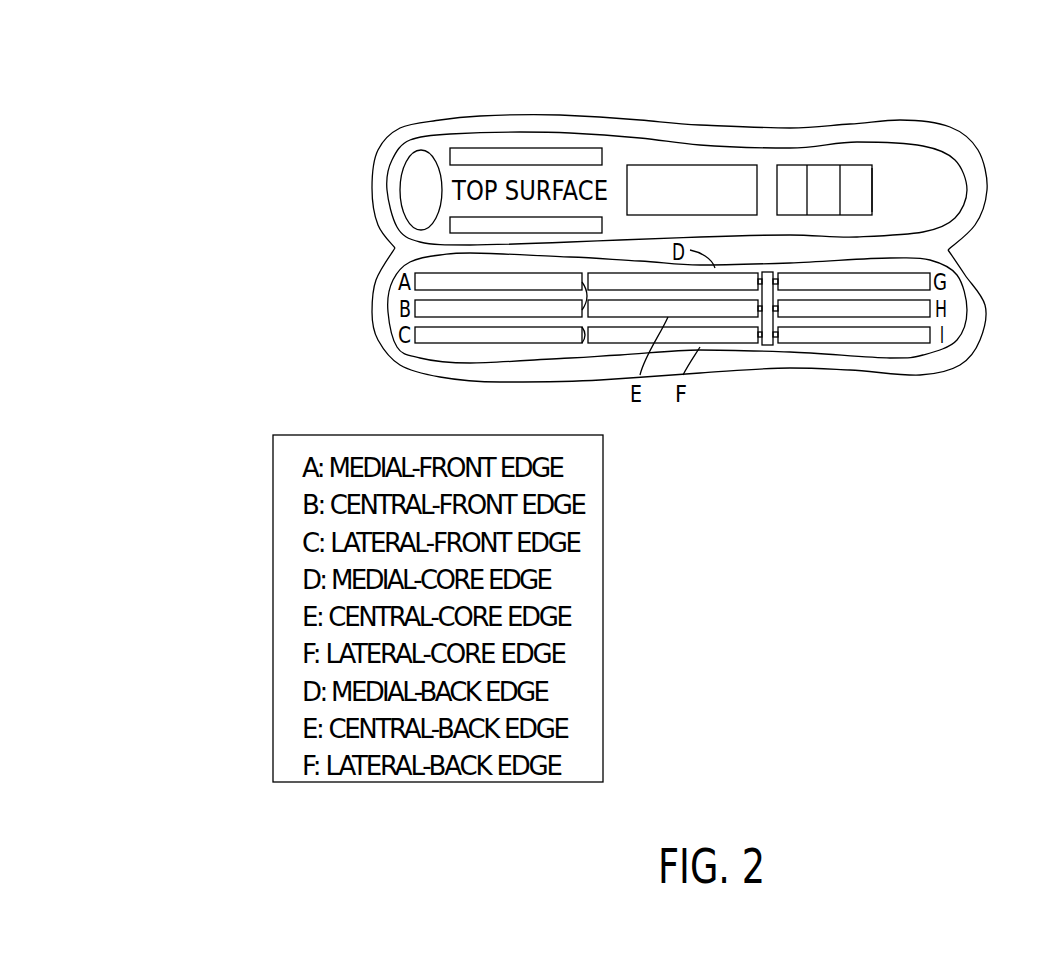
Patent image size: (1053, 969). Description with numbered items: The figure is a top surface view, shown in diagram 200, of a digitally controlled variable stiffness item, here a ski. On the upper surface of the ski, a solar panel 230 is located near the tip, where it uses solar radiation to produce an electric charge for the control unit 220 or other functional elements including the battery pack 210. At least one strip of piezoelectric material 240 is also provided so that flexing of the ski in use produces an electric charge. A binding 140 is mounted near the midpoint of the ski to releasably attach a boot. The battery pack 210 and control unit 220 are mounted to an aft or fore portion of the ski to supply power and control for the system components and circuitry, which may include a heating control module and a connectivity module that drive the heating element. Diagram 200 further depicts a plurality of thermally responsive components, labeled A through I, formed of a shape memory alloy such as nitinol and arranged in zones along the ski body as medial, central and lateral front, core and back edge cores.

The diagram 200 is at (186, 113).
The solar panel 230 is at (423, 150).
The strip of piezoelectric material 240 is at (567, 148).
The binding 140 is at (650, 165).
The battery pack 210 is at (832, 165).
The control unit 220 is at (873, 178).